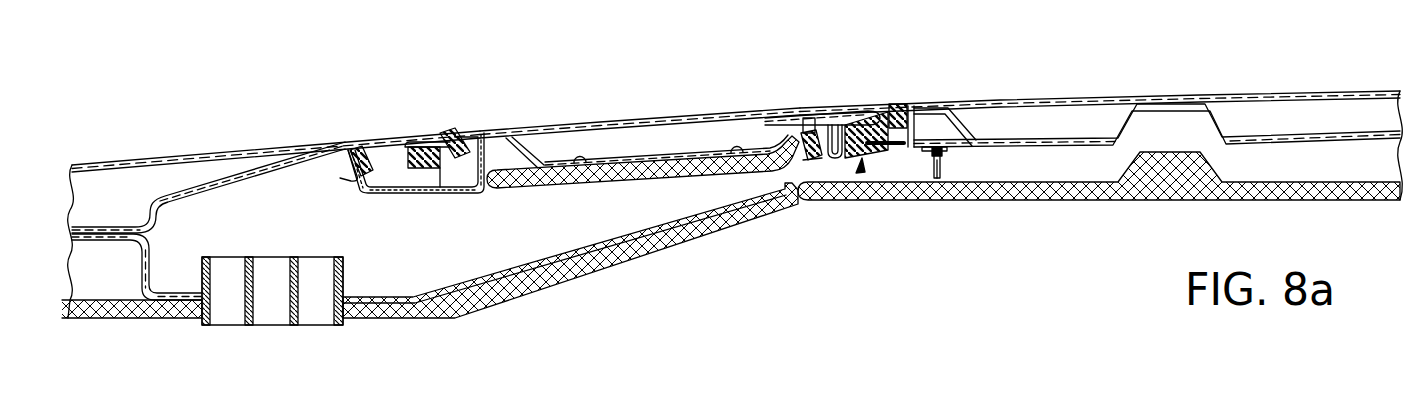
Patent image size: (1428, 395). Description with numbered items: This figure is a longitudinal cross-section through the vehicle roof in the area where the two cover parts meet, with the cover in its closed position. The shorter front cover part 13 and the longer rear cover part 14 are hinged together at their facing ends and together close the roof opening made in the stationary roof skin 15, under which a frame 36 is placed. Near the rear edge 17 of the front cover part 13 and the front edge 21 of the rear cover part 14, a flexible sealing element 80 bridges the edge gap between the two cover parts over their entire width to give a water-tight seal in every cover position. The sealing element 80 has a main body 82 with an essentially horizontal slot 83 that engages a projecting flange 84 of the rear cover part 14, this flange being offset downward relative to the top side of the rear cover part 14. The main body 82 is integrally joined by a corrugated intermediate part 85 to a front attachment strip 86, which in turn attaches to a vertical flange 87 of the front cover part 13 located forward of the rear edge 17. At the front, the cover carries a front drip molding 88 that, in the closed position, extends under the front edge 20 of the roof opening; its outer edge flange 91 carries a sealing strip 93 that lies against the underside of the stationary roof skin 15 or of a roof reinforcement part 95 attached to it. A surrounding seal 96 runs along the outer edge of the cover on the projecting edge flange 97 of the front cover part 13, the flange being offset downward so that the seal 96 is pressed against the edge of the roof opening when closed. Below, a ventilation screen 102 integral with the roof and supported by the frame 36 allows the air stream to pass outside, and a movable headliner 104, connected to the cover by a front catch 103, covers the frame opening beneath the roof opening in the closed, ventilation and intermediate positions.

The front cover part 13 is at (607, 118).
The rear cover part 14 is at (1280, 90).
The stationary roof skin 15 is at (173, 160).
The rear edge of front cover part 17 is at (880, 105).
The front edge of roof opening 20 is at (440, 150).
The front edge of rear cover part 21 is at (913, 108).
The frame 36 is at (455, 290).
The flexible sealing element 80 is at (862, 173).
The main body 82 is at (895, 115).
The horizontal slot 83 is at (887, 150).
The projecting flange 84 is at (925, 155).
The corrugated intermediate part 85 is at (837, 148).
The front attachment strip 86 is at (813, 160).
The vertical flange 87 is at (797, 117).
The front drip molding 88 is at (417, 193).
The outer edge flange 91 is at (347, 176).
The sealing strip 93 is at (367, 155).
The roof reinforcement part 95 is at (257, 170).
The surrounding seal 96 is at (458, 132).
The projecting edge flange 97 is at (447, 190).
The ventilation screen 102 is at (345, 320).
The front catch 103 is at (947, 170).
The movable headliner 104 is at (1080, 187).